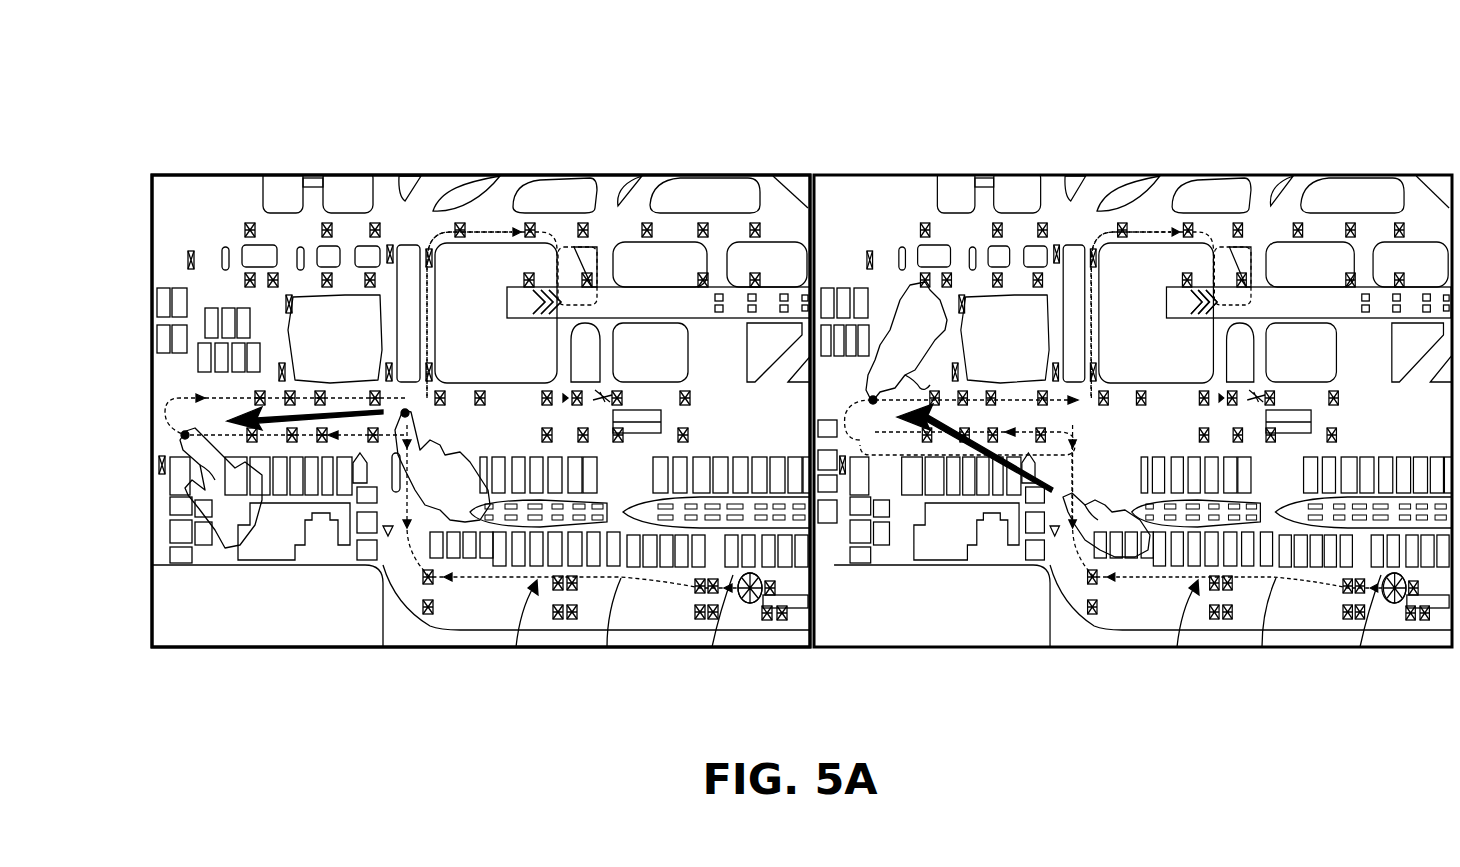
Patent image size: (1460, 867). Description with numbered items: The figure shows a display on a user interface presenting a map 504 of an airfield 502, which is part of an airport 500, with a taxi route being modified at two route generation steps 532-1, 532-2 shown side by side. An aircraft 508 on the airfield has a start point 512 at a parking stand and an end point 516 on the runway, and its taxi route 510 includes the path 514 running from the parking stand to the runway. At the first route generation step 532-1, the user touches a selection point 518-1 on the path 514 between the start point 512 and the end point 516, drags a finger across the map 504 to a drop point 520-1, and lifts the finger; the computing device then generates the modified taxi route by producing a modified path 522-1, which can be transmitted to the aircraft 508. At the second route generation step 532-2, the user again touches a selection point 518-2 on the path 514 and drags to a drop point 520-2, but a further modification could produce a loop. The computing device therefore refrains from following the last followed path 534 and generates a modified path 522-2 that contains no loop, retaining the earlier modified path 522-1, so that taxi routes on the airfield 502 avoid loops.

The airport 500 is at (300, 76).
The airfield 502 is at (140, 178).
The map 504 is at (162, 246).
The aircraft 508 is at (757, 603).
The taxi route 510 is at (516, 647).
The start point 512 is at (712, 647).
The path 514 is at (607, 647).
The end point 516 is at (596, 285).
The selection point 518-1 is at (383, 648).
The selection point 518-2 is at (1050, 648).
The drop point 520-1 is at (182, 436).
The drop point 520-2 is at (875, 406).
The modified path 522-1 is at (303, 398).
The modified path 522-2 is at (990, 400).
The route generation step 532-1 is at (520, 152).
The route generation step 532-2 is at (1145, 148).
The last followed path 534 is at (990, 400).